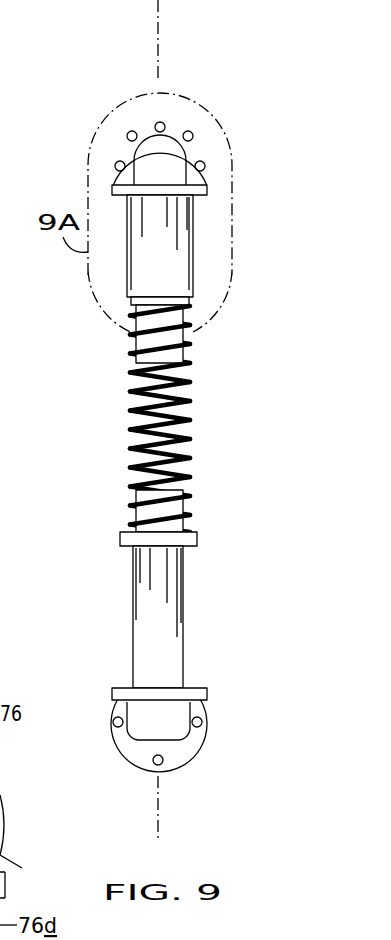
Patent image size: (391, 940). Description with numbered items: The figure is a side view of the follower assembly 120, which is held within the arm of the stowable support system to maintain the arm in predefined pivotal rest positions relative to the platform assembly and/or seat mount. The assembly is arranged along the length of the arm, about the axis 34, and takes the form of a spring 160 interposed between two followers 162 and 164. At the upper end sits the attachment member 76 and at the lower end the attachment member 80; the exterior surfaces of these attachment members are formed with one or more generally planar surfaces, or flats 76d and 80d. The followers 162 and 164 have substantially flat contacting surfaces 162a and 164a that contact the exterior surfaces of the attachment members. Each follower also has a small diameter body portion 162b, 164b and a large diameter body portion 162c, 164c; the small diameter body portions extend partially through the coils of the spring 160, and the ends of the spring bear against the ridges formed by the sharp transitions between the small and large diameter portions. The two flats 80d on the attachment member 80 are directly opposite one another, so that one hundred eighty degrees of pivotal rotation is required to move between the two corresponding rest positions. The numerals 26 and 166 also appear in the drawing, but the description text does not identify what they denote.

The axis 34 is at (160, 24).
The follower assembly 120 is at (226, 357).
The attachment member 76 is at (170, 130).
The flats 76d is at (137, 155).
The follower 162 is at (196, 263).
The flat contacting surface 162a is at (123, 183).
The small diameter body portion 162b is at (155, 357).
The large diameter body portion 162c is at (140, 273).
The spring 160 is at (187, 465).
The follower 164 is at (183, 639).
The flat contacting surface 164a is at (200, 700).
The small diameter body portion 164b is at (180, 510).
The large diameter body portion 164c is at (172, 662).
The attachment member 80 is at (188, 745).
The flats 80d is at (147, 697).
The frame member 26 is at (10, 806).
The bracket 166 is at (26, 886).